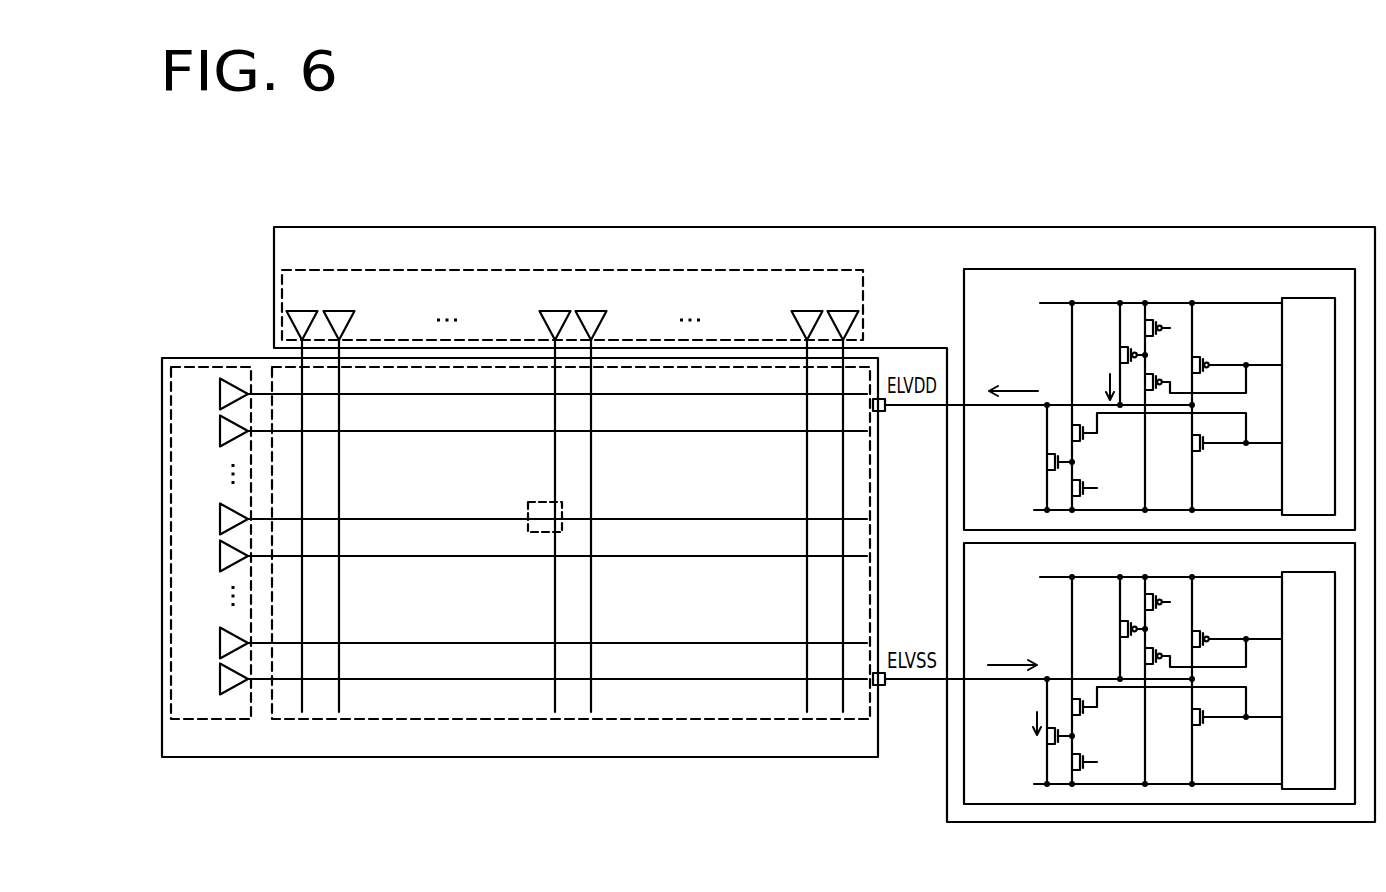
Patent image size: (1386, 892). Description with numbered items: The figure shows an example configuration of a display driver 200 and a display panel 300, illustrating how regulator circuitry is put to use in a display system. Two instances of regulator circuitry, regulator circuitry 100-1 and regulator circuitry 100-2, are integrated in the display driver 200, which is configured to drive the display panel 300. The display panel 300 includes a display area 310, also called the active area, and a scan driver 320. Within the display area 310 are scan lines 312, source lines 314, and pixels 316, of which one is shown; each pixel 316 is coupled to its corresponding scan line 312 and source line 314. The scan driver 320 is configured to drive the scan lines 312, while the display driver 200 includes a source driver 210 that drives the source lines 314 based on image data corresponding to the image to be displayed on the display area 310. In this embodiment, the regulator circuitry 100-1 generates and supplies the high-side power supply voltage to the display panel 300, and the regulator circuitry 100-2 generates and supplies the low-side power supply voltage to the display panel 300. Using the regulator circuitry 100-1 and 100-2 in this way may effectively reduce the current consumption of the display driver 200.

The display driver 200 is at (727, 258).
The source driver 210 is at (707, 300).
The display panel 300 is at (625, 751).
The display area 310 is at (718, 474).
The scan lines 312 is at (371, 395).
The source lines 314 is at (304, 596).
The pixel 316 is at (528, 512).
The scan driver 320 is at (212, 408).
The regulator circuitry 100-1 is at (1114, 399).
The regulator circuitry 100-2 is at (1114, 673).